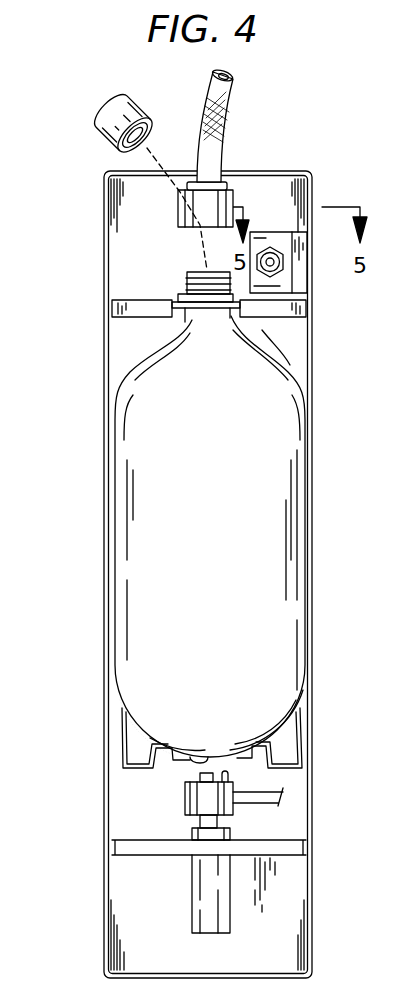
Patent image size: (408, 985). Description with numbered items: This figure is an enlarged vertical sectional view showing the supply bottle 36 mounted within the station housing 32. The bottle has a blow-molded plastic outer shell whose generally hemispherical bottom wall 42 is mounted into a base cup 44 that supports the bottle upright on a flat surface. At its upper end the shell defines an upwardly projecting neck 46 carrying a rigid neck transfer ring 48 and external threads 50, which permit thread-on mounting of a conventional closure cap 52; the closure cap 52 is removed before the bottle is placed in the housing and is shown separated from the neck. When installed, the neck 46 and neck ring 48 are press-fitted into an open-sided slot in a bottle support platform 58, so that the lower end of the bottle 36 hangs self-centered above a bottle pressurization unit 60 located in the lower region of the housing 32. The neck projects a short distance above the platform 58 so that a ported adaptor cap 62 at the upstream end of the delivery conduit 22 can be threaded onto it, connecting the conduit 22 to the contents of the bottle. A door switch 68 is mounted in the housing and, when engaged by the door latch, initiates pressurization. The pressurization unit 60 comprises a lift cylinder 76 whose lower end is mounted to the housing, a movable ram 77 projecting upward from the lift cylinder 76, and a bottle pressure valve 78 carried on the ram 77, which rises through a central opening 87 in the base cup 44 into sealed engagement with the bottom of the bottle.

The delivery conduit 22 is at (222, 90).
The station housing 32 is at (312, 378).
The supply bottle 36 is at (138, 569).
The bottom wall 42 is at (143, 710).
The base cup 44 is at (308, 723).
The neck 46 is at (193, 322).
The neck transfer ring 48 is at (238, 305).
The external threads 50 is at (190, 281).
The closure cap 52 is at (100, 142).
The bottle support platform 58 is at (133, 299).
The bottle pressurization unit 60 is at (278, 884).
The ported adaptor cap 62 is at (235, 195).
The door switch 68 is at (280, 266).
The lift cylinder 76 is at (195, 902).
The movable ram 77 is at (218, 819).
The bottle pressure valve 78 is at (186, 797).
The central opening 87 is at (191, 757).